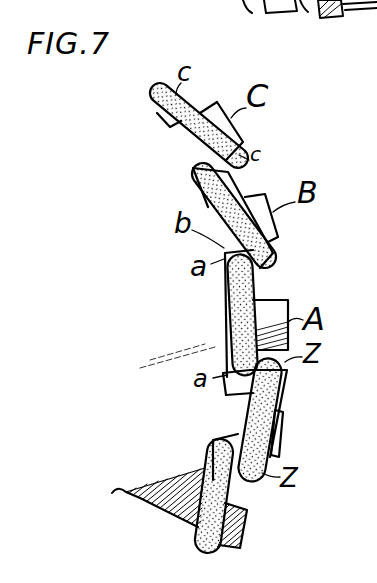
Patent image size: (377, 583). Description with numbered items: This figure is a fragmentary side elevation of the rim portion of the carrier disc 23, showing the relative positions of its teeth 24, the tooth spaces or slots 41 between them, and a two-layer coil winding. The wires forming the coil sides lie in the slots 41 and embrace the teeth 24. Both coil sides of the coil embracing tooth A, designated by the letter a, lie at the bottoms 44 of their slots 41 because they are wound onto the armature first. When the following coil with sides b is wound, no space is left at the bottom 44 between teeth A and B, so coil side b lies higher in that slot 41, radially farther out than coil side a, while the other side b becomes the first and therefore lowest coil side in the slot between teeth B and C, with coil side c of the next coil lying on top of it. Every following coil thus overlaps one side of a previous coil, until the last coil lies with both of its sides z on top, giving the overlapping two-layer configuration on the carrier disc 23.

The carrier disc 23 is at (160, 120).
The slot 41 is at (298, 4).
The bottom of the slot 44 is at (195, 172).
The tooth 24 is at (281, 298).